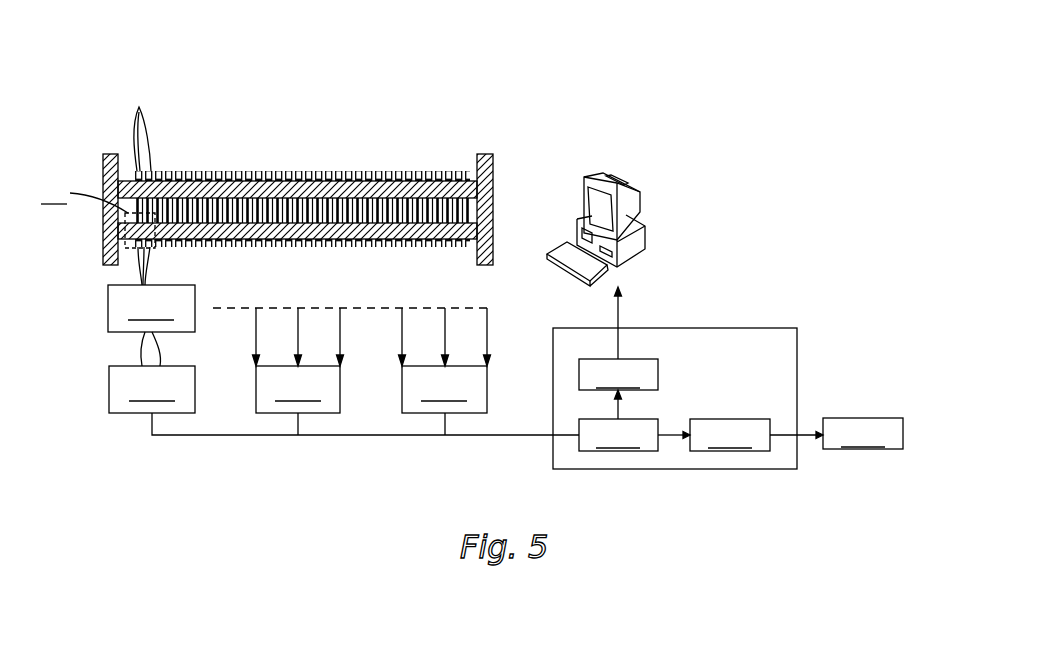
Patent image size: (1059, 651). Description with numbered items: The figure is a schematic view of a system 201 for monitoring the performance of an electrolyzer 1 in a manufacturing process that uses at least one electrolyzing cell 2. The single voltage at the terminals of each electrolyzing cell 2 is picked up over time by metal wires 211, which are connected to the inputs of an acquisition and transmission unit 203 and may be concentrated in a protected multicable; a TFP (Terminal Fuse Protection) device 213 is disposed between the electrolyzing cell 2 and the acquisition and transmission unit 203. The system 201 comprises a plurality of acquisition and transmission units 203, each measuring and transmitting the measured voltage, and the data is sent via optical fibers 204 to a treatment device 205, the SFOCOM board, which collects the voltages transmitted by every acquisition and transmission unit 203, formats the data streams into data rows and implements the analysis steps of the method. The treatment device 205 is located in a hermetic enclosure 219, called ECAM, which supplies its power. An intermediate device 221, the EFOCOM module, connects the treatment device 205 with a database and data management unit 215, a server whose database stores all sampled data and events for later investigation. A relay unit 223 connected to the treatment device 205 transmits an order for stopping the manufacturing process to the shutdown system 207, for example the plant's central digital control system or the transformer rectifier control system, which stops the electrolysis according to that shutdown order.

The electrolyzer 1 is at (440, 144).
The electrolyzing cell 2 is at (147, 101).
The system 201 is at (686, 81).
The acquisition and transmission unit 203 is at (300, 360).
The optical fibers 204 is at (310, 436).
The treatment device 205 is at (618, 435).
The shutdown system 207 is at (836, 433).
The metal wires 211 is at (135, 263).
The TFP device 213 is at (151, 308).
The database and data management unit 215 is at (622, 183).
The hermetic enclosure 219 is at (675, 414).
The intermediate device 221 is at (618, 374).
The relay unit 223 is at (685, 470).